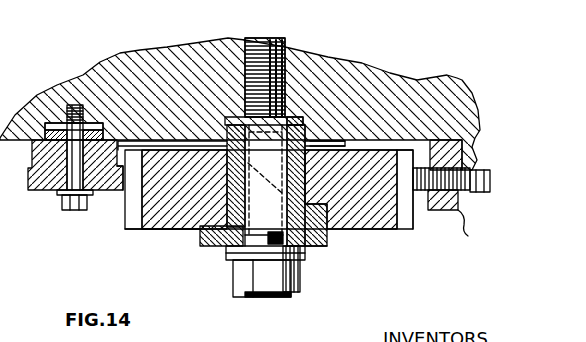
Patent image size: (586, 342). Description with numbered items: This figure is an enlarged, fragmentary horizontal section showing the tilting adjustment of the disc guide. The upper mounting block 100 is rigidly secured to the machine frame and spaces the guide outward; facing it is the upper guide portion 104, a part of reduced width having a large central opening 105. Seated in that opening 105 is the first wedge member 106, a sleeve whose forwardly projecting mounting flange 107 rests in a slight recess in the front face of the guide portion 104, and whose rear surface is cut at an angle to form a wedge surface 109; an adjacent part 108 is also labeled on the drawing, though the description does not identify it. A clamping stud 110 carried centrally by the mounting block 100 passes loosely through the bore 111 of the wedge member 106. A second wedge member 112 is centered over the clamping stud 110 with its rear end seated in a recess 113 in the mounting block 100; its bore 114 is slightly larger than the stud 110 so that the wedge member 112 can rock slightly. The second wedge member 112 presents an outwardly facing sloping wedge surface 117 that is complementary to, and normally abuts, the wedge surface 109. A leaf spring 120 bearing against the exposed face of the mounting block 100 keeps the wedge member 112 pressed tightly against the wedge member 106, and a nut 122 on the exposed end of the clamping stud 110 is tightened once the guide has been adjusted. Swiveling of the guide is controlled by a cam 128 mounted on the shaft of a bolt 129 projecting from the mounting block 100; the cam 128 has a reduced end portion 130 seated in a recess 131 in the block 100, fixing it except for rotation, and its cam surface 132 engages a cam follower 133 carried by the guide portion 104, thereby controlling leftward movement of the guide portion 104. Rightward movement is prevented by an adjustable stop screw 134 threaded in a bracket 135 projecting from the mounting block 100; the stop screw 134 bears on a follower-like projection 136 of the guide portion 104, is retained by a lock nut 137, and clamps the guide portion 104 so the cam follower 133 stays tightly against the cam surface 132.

The mounting block 100 is at (325, 62).
The guide portion 104 is at (174, 220).
The central opening 105 is at (316, 142).
The first wedge member 106 is at (228, 190).
The mounting flange 107 is at (315, 249).
The collar 108 is at (330, 222).
The wedge surface 109 is at (307, 203).
The clamping stud 110 is at (283, 72).
The bore 111 is at (323, 236).
The second wedge member 112 is at (290, 117).
The recess 113 is at (226, 130).
The bore 114 is at (310, 165).
The sloping wedge surface 117 is at (297, 199).
The leaf spring 120 is at (172, 143).
The nut 122 is at (302, 279).
The cam 128 is at (108, 191).
The bolt 129 is at (58, 192).
The reduced end portion 130 is at (93, 125).
The recess 131 is at (48, 122).
The cam surface 132 is at (32, 166).
The cam follower 133 is at (124, 231).
The adjustable stop screw 134 is at (417, 209).
The bracket 135 is at (468, 236).
The follower-like projection 136 is at (405, 222).
The lock nut 137 is at (476, 130).